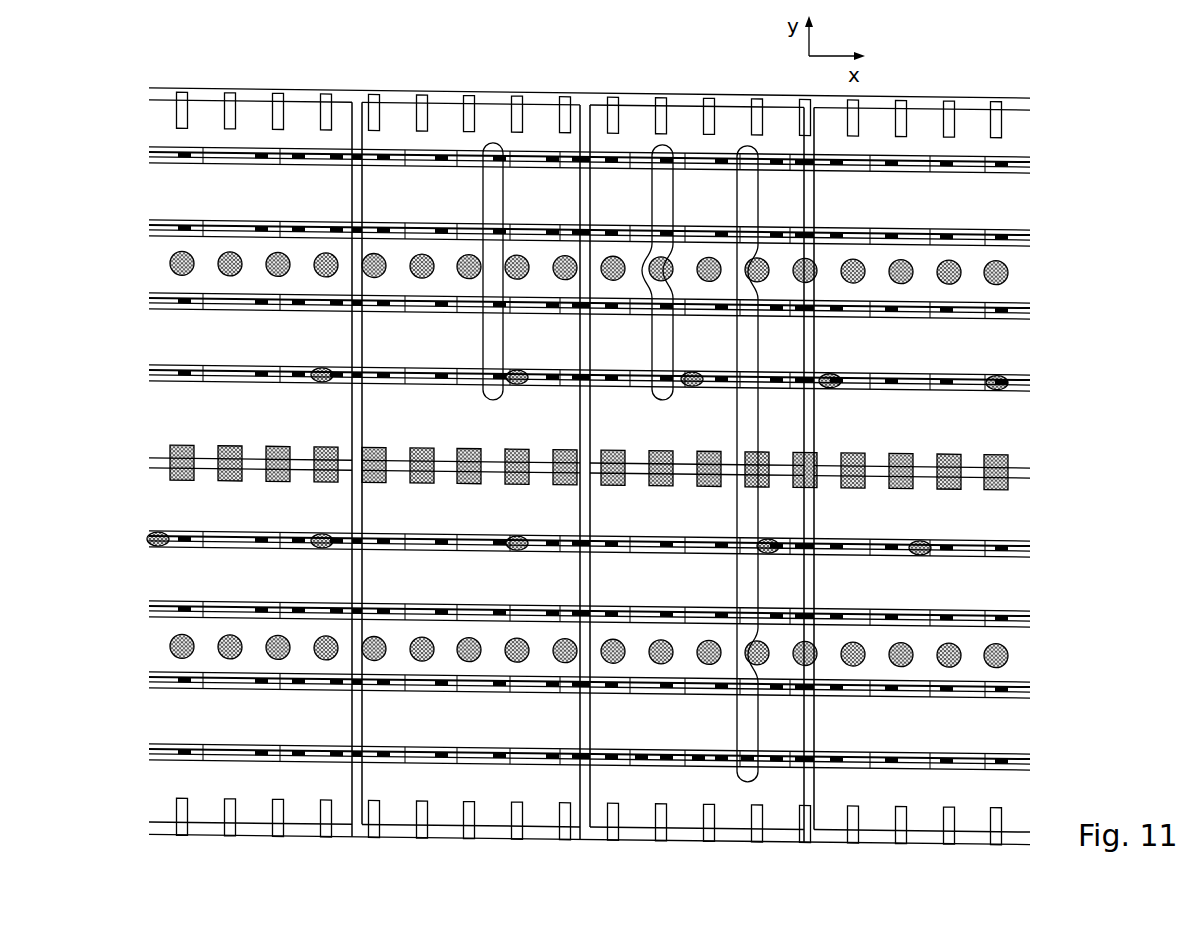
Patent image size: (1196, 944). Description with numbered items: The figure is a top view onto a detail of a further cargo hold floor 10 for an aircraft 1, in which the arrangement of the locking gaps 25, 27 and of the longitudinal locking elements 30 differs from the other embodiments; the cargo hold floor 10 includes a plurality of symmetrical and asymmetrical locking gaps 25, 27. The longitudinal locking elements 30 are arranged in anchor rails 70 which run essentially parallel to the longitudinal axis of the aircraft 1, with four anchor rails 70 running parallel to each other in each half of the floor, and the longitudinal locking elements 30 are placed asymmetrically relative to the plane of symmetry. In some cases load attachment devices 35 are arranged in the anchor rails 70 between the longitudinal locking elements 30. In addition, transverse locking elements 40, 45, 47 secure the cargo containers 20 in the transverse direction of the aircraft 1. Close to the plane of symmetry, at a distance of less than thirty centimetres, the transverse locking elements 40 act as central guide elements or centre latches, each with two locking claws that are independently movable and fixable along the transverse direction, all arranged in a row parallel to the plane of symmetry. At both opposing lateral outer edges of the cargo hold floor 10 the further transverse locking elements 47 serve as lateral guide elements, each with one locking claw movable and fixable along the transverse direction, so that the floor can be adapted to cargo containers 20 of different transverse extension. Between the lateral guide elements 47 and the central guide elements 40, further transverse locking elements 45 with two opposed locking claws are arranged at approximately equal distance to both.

The aircraft 1 is at (405, 80).
The cargo hold floor 10 is at (338, 86).
The cargo container 20 is at (598, 832).
The locking gap 25 is at (747, 144).
The locking gap 27 is at (493, 141).
The longitudinal locking element 30 is at (640, 766).
The load attachment device 35 is at (920, 160).
The transverse locking element (central guide element, centre latch) 40 is at (467, 485).
The further transverse locking element 45 is at (418, 664).
The transverse locking element (lateral guide element) 47 is at (417, 808).
The anchor rail 70 is at (990, 696).